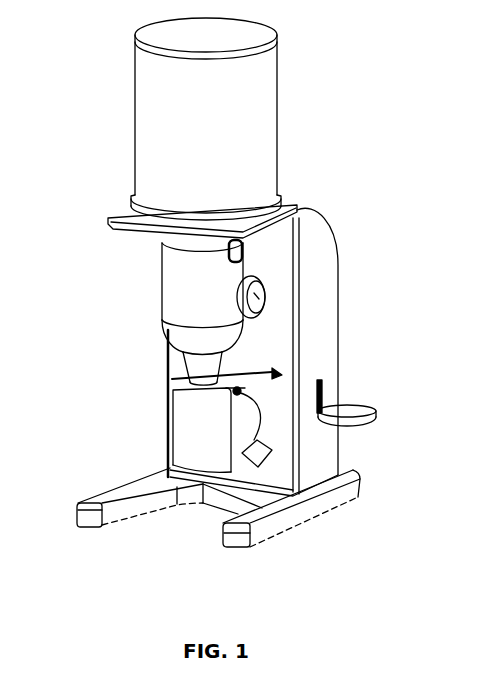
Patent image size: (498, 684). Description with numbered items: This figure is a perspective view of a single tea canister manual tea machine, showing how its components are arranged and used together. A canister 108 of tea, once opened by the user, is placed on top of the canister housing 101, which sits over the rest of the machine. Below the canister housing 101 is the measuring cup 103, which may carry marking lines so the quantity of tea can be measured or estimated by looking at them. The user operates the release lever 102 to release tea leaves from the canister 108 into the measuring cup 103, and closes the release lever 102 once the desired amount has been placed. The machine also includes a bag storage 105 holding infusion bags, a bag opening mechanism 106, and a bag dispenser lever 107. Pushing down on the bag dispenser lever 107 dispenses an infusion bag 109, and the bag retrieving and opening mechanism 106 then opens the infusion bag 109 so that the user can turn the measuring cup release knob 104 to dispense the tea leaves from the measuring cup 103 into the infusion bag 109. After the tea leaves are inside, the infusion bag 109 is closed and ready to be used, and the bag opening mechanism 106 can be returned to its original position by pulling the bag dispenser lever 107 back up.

The canister housing 101 is at (284, 200).
The release lever 102 is at (302, 240).
The measuring cup 103 is at (188, 280).
The measuring cup release knob 104 is at (264, 283).
The bag storage 105 is at (287, 333).
The bag opening mechanism 106 is at (280, 374).
The bag dispenser lever 107 is at (368, 410).
The canister 108 is at (242, 112).
The infusion bag 109 is at (182, 415).